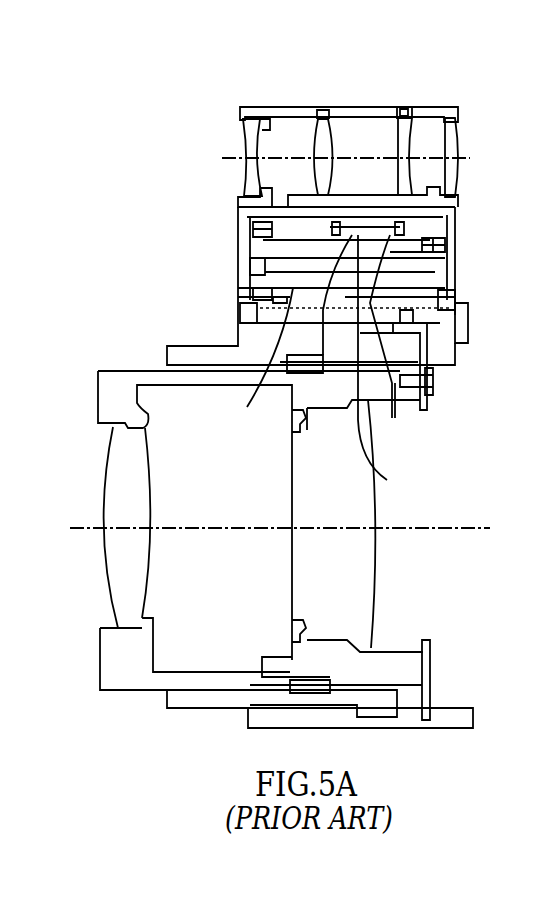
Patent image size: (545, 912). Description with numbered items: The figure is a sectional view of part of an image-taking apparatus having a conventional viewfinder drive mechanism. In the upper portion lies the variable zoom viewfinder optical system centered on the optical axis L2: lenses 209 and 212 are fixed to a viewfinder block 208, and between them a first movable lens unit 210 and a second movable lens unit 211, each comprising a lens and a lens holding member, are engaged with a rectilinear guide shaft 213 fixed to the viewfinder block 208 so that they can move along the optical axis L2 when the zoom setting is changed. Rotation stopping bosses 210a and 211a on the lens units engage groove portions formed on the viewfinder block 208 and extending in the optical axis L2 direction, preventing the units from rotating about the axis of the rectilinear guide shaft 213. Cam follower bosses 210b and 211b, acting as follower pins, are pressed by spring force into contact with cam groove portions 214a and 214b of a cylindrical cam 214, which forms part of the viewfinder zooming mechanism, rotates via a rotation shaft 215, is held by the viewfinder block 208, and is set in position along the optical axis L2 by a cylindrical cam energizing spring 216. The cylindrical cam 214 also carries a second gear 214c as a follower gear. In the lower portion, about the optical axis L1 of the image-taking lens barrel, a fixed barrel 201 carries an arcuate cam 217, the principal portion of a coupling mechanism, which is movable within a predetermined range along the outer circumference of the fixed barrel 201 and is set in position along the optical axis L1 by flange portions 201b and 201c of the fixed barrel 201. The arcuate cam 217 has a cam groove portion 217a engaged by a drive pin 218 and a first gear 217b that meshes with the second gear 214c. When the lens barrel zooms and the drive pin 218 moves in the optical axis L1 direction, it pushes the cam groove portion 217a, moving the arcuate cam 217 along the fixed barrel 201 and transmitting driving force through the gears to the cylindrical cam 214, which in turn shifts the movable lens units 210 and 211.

The fixed barrel 201 is at (247, 335).
The flange portion 201b is at (243, 321).
The flange portion 201c is at (470, 311).
The viewfinder block 208 is at (253, 107).
The lens 209 is at (242, 128).
The first movable lens unit 210 is at (317, 133).
The rotation stopping boss 210a is at (320, 106).
The cam follower boss 210b is at (337, 222).
The second movable lens unit 211 is at (395, 125).
The rotation stopping boss 211a is at (405, 112).
The cam follower boss 211b is at (398, 223).
The lens 212 is at (455, 135).
The rectilinear guide shaft 213 is at (452, 208).
The cylindrical cam 214 is at (263, 243).
The cam groove portion 214a is at (387, 480).
The cam groove portion 214b is at (396, 344).
The second gear 214c is at (258, 365).
The rotation shaft 215 is at (250, 265).
The cylindrical cam energizing spring 216 is at (446, 241).
The arcuate cam 217 is at (248, 305).
The cam groove portion 217a is at (456, 304).
The first gear 217b is at (244, 291).
The drive pin 218 is at (455, 334).
The optical axis L1 is at (267, 533).
The optical axis L2 is at (334, 160).